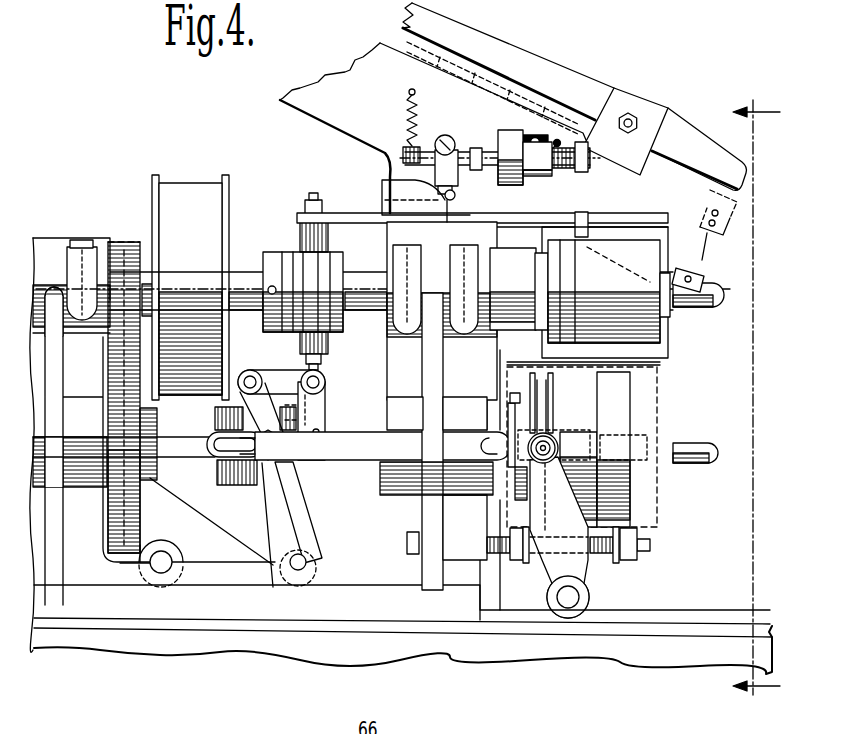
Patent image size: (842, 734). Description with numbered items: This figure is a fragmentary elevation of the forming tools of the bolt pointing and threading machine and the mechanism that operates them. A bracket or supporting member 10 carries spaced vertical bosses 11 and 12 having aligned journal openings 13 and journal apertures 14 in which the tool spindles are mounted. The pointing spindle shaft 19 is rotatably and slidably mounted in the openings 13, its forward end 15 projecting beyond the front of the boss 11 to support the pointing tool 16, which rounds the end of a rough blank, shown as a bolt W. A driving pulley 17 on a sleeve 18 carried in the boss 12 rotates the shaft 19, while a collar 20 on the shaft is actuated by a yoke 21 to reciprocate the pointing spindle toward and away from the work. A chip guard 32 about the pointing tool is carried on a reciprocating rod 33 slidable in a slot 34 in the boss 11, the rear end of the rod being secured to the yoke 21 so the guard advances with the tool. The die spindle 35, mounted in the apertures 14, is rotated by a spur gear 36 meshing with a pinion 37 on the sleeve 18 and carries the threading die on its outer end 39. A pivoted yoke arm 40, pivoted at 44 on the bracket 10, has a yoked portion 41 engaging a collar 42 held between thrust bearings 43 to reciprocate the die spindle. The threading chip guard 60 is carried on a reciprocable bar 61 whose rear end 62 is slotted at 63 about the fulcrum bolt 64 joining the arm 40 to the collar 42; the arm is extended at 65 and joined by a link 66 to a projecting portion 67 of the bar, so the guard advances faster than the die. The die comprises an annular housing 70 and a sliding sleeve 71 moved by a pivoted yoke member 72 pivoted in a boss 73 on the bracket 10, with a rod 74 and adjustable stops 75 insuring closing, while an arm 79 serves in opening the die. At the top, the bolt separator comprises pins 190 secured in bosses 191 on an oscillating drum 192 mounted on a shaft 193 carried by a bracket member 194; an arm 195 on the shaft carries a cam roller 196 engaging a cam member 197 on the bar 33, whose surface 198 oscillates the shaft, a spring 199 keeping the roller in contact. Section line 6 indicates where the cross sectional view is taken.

The bracket or supporting member 10 is at (223, 600).
The vertical boss 11 is at (482, 350).
The vertical boss 12 is at (52, 252).
The journal openings 13 is at (103, 260).
The journal apertures 14 is at (103, 448).
The forward end of pointing spindle 15 is at (518, 277).
The pointing tool 16 is at (660, 255).
The driving pulley 17 is at (197, 193).
The sleeve 18 is at (155, 262).
The pointing spindle shaft 19 is at (258, 268).
The collar 20 is at (310, 268).
The yoke 21 is at (307, 237).
The chip guard 32 is at (647, 223).
The reciprocating rod 33 is at (355, 217).
The slot 34 is at (470, 225).
The die spindle 35 is at (172, 460).
The spur gear 36 is at (110, 530).
The pinion 37 is at (125, 240).
The outer end of die spindle 39 is at (495, 480).
The pivoted yoke arm 40 is at (305, 525).
The yoked portion 41 is at (263, 492).
The collar 42 is at (215, 412).
The thrust bearings 43 is at (297, 418).
The pivot 44 is at (302, 563).
The chip guard 60 is at (657, 368).
The reciprocable link or bar 61 is at (365, 443).
The rear end of bar 62 is at (210, 437).
The slot 63 is at (227, 487).
The fulcrum bolt 64 is at (293, 473).
The extended portion of arm 65 is at (237, 383).
The link 66 is at (290, 372).
The projecting portion 67 is at (327, 393).
The annular die housing 70 is at (627, 408).
The sliding sleeve 71 is at (548, 395).
The pivoted yoke member 72 is at (580, 567).
The boss 73 is at (527, 608).
The rod 74 is at (650, 543).
The adjustable nuts or stops 75 is at (513, 557).
The arm 79 is at (167, 525).
The reciprocated pins 190 is at (556, 141).
The bosses 191 is at (528, 135).
The oscillating drum or collar member 192 is at (505, 137).
The oscillating shaft 193 is at (485, 152).
The bracket member 194 is at (583, 176).
The laterally projecting arm 195 is at (458, 155).
The cam roller 196 is at (443, 207).
The cam member 197 is at (395, 187).
The cam surface 198 is at (473, 182).
The spring 199 is at (407, 113).
The bolt W is at (715, 283).
The section line 6— 6 is at (756, 393).